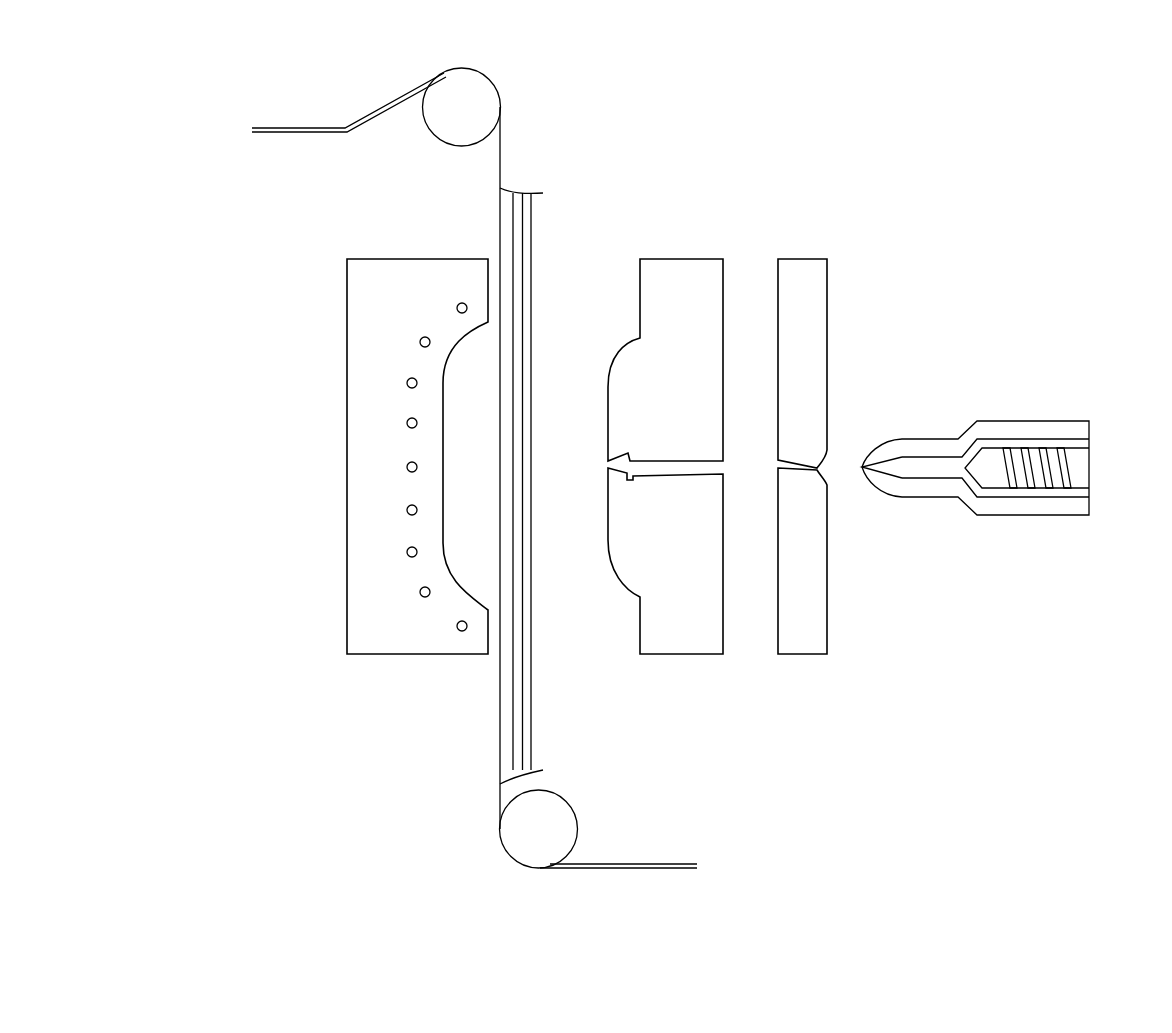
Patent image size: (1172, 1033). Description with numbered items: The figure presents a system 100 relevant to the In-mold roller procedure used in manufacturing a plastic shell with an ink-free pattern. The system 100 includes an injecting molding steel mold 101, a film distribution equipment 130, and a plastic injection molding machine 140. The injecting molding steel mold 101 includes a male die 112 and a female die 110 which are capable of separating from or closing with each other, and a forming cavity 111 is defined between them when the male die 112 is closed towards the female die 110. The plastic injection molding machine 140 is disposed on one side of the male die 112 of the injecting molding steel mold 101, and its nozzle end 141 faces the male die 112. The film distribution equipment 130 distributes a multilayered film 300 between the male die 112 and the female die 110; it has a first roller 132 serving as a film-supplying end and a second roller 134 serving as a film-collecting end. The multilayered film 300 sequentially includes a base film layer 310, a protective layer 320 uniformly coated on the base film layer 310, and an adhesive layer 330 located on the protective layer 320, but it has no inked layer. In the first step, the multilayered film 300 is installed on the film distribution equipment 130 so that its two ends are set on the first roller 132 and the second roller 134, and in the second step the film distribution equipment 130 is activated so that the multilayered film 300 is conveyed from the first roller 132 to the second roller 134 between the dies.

The system 100 is at (188, 104).
The injecting molding steel mold 101 is at (318, 625).
The female die 110 is at (387, 637).
The forming cavity 111 is at (464, 452).
The male die 112 is at (678, 642).
The film distribution equipment 130 is at (590, 780).
The first roller 132 is at (547, 826).
The second roller 134 is at (448, 122).
The plastic injection molding machine 140 is at (1027, 432).
The nozzle tip 141 is at (927, 470).
The multilayered film 300 is at (653, 165).
The base film layer 310 is at (507, 210).
The protective layer 320 is at (517, 232).
The adhesive layer 330 is at (527, 260).